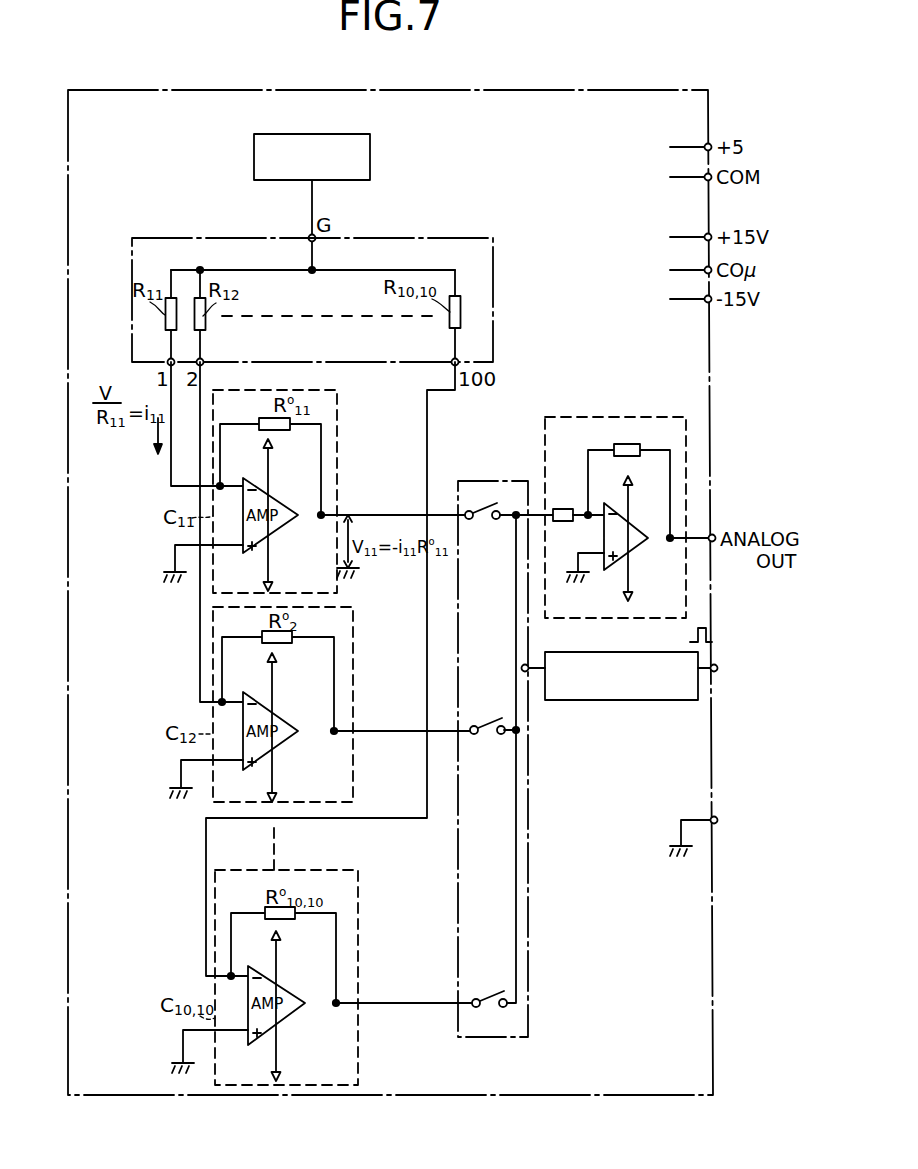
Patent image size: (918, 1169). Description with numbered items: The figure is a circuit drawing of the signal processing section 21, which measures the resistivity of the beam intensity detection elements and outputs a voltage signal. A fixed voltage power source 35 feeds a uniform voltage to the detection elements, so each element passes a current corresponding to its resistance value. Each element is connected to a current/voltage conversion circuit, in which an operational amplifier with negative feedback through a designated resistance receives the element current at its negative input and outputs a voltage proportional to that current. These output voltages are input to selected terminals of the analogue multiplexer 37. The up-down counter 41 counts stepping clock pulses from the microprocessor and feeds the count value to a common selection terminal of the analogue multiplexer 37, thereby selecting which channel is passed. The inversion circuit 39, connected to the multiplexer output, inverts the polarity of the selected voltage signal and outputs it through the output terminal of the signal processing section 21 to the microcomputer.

The signal processing section 21 is at (580, 90).
The fixed voltage power source 35 is at (338, 142).
The analogue multiplexer 37 is at (509, 481).
The inversion circuit 39 is at (650, 417).
The up-down counter 41 is at (672, 700).